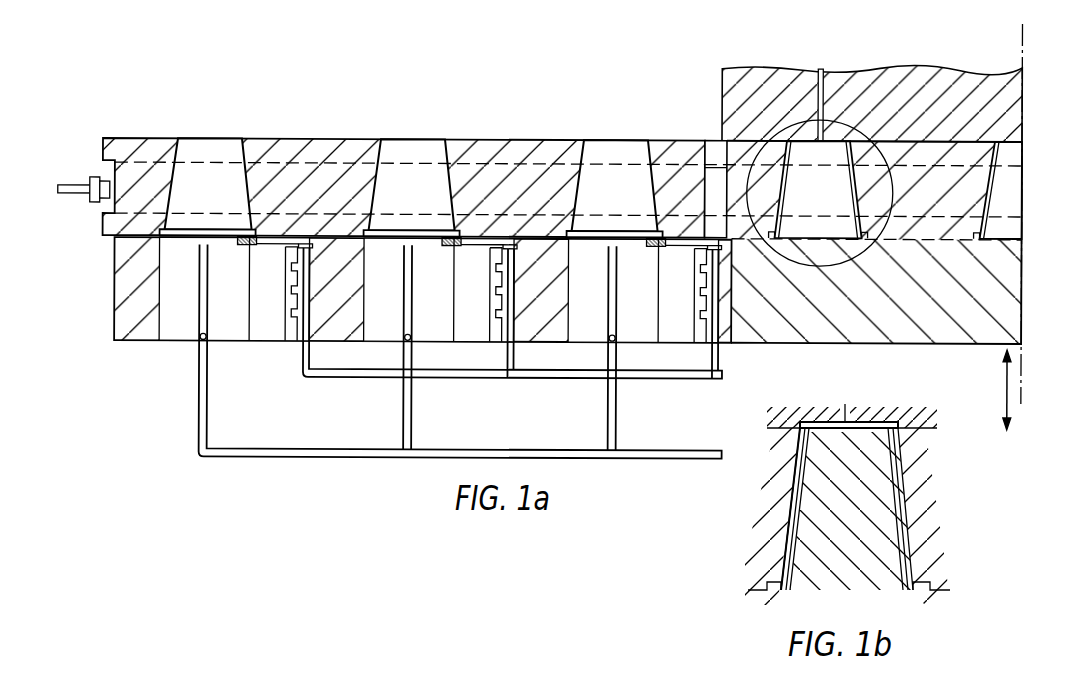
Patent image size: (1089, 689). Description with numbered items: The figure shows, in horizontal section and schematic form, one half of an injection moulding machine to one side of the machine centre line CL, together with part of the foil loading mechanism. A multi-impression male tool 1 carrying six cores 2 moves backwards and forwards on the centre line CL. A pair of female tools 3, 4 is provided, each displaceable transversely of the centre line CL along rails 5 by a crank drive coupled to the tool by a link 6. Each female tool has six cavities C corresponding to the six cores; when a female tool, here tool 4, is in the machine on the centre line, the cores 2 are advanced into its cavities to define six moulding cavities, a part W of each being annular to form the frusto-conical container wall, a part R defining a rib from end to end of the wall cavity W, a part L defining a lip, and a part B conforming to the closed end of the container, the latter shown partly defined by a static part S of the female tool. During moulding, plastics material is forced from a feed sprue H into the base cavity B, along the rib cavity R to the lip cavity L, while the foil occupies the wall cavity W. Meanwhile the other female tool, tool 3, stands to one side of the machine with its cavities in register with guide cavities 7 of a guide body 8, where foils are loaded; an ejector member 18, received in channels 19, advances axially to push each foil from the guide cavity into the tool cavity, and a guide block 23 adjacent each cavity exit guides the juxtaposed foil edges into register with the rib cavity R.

In FIG. 1a, the multi-impression male tool 1 is at (855, 328).
In FIG. 1a, the core 2 is at (783, 182).
In FIG. 1a, the female tool 3 is at (328, 147).
In FIG. 1a, the female tool 4 is at (978, 165).
In FIG. 1a, the rail 5 is at (197, 134).
In FIG. 1a, the link 6 is at (88, 190).
In FIG. 1a, the guide cavity 7 is at (162, 298).
In FIG. 1a, the guide body 8 is at (114, 284).
In FIG. 1a, the ejector member 18 is at (207, 338).
In FIG. 1a, the channel 19 is at (205, 300).
In FIG. 1a, the guide block 23 is at (246, 241).
In FIG. 1a, the cavity C is at (242, 157).
In FIG. 1a, the machine centre line CL is at (1021, 55).
In FIG. 1a, the static part S is at (1010, 115).
In FIG. 1a, the base cavity B is at (790, 183).
In FIG. 1b, the base cavity B is at (880, 428).
In FIG. 1a, the feed sprue H is at (823, 114).
In FIG. 1b, the feed sprue H is at (846, 406).
In FIG. 1a, the wall cavity W is at (786, 206).
In FIG. 1b, the wall cavity W is at (785, 546).
In FIG. 1a, the lip cavity L is at (772, 234).
In FIG. 1b, the lip cavity L is at (765, 584).
In FIG. 1a, the rib cavity R is at (849, 218).
In FIG. 1b, the rib cavity R is at (905, 563).